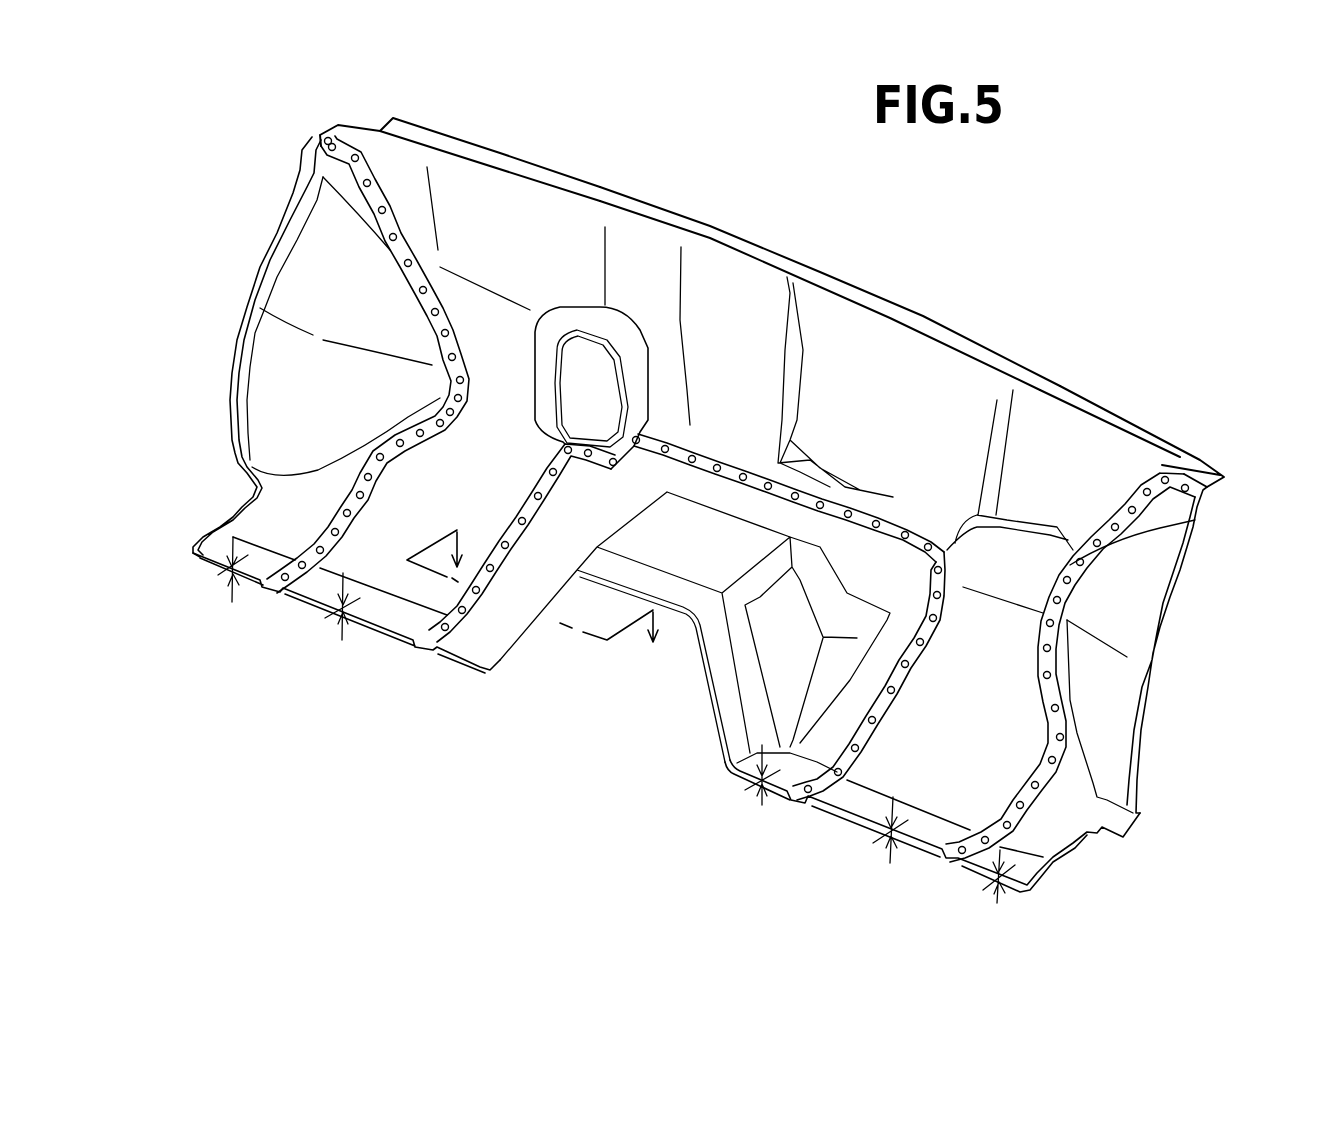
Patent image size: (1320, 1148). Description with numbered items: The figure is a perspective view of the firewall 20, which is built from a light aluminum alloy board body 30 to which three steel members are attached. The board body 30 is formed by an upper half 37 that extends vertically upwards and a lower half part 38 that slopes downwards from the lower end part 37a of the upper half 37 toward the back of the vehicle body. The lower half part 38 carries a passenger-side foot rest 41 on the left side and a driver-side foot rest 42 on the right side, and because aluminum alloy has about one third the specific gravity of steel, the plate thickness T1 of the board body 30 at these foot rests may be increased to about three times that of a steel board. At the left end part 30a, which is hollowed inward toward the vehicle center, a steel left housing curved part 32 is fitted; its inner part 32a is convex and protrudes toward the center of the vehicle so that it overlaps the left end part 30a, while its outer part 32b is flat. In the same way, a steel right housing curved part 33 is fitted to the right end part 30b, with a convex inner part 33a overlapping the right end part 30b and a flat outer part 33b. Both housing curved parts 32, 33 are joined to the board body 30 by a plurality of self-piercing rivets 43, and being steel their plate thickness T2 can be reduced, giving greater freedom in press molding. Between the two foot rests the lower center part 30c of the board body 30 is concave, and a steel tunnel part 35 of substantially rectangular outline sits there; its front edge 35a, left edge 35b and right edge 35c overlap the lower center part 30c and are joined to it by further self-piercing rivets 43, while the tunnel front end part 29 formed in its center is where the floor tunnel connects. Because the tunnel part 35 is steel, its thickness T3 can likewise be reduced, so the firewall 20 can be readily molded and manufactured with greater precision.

The firewall 20 is at (902, 255).
The tunnel front end part 29 is at (640, 530).
The board body 30 is at (724, 216).
The left end part 30a is at (440, 283).
The right end part 30b is at (1090, 493).
The lower center part 30c is at (740, 453).
The left housing curved part 32 is at (295, 265).
The inner part 32a is at (443, 320).
The outer part 32b is at (283, 210).
The right housing curved part 33 is at (1153, 618).
The inner part 33a is at (1047, 637).
The outer part 33b is at (1147, 687).
The tunnel part 35 is at (835, 746).
The front edge 35a is at (703, 453).
The left edge 35b is at (510, 520).
The right edge 35c is at (893, 713).
The upper half 37 is at (760, 283).
The lower end part 37a is at (527, 330).
The lower half part 38 is at (410, 443).
The passenger-side foot rest 41 is at (398, 487).
The driver-side foot rest 42 is at (1017, 723).
The self-piercing rivets 43 is at (403, 260).
The plate thickness T1 is at (340, 608).
The plate thickness T2 is at (230, 567).
The plate thickness T3 is at (762, 777).